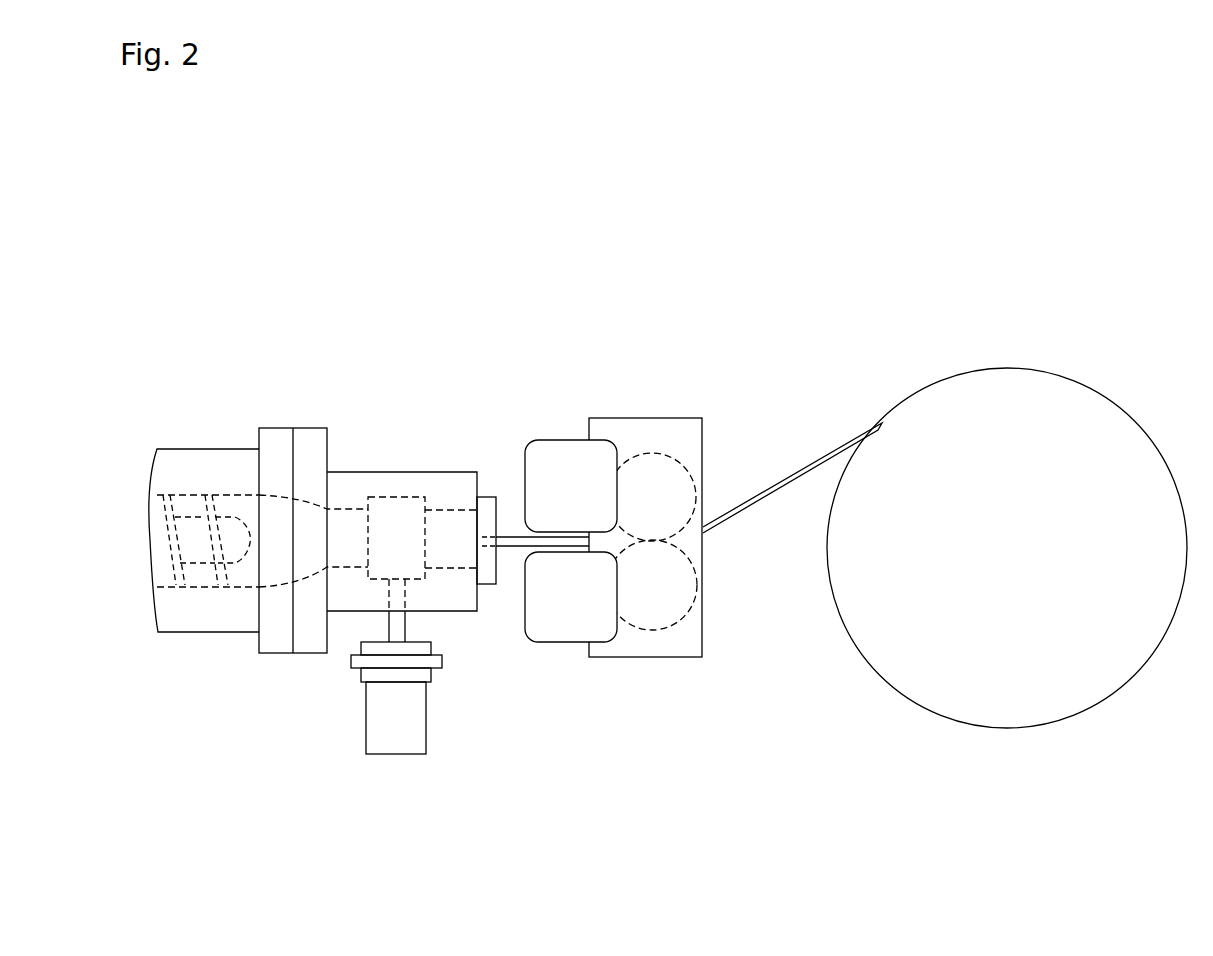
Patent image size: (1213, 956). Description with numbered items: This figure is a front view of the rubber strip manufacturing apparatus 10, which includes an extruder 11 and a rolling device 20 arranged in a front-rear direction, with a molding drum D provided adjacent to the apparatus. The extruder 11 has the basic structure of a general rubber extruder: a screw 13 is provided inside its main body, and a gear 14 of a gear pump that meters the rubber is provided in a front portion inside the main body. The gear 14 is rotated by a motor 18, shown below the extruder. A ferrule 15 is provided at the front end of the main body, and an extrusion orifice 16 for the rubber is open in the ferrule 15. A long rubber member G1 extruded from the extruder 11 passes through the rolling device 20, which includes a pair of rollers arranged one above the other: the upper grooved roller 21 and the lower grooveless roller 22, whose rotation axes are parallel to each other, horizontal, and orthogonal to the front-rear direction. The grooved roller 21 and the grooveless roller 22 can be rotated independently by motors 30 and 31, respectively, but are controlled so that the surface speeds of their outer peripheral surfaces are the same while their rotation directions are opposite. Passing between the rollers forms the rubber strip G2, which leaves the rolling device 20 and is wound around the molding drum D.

The rubber strip manufacturing apparatus 10 is at (472, 277).
The extruder 11 is at (320, 410).
The screw 13 is at (178, 495).
The gear 14 is at (397, 497).
The ferrule 15 is at (485, 495).
The extrusion orifice 16 is at (498, 547).
The motor 18 is at (383, 713).
The rolling device 20 is at (641, 392).
The grooved roller 21 is at (677, 452).
The grooveless roller 22 is at (685, 617).
The motor 30 is at (560, 452).
The motor 31 is at (562, 640).
The long rubber member G1 is at (500, 537).
The rubber strip G2 is at (817, 450).
The molding drum D is at (1009, 378).